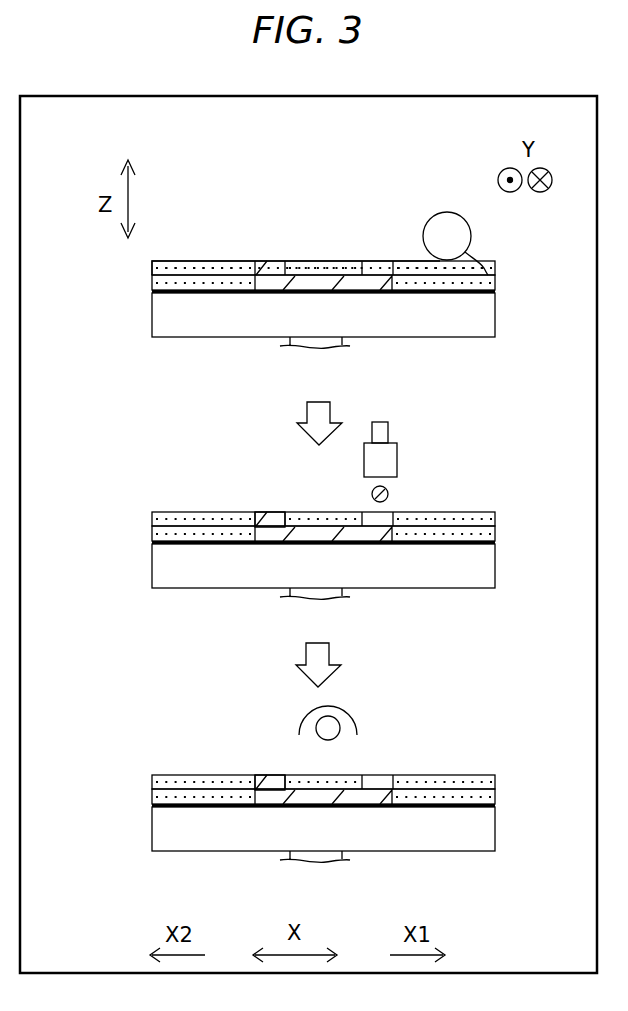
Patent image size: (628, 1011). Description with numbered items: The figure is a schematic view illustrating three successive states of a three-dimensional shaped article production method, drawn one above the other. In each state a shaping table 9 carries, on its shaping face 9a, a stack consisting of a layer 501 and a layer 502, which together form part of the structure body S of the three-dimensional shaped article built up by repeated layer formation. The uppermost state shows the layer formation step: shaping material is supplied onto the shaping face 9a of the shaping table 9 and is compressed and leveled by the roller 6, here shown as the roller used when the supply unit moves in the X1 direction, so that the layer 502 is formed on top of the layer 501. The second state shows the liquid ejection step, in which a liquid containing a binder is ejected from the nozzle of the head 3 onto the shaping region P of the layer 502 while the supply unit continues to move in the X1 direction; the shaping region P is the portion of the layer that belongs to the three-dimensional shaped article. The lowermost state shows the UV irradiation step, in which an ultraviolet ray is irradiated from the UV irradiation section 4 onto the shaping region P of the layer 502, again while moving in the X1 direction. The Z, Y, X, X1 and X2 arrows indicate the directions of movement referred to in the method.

The shaping table 9 is at (187, 322).
The shaping face 9a is at (153, 295).
The layer 501 is at (152, 282).
The layer 502 is at (152, 268).
The structure body S is at (252, 287).
The shaping region P is at (268, 494).
The roller 6 is at (445, 212).
The head 3 is at (378, 422).
The UV irradiation section 4 is at (350, 708).